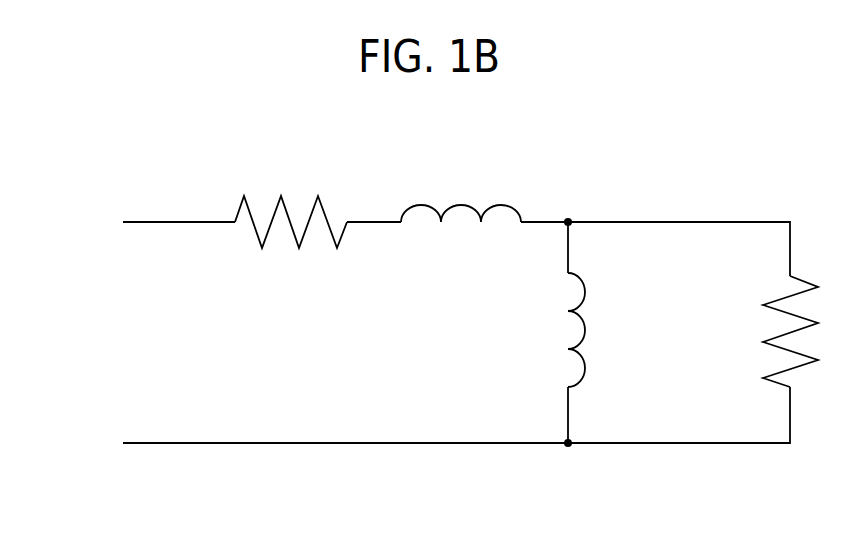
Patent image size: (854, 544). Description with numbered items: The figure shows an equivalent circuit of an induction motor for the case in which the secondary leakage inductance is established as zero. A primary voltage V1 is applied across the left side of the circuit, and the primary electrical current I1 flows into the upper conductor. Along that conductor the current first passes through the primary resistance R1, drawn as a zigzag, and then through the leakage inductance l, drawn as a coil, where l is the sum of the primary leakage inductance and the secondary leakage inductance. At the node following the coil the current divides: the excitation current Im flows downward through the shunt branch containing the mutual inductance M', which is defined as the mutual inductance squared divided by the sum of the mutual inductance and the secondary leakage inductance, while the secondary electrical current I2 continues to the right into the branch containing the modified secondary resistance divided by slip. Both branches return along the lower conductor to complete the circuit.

The primary resistance R1 is at (291, 203).
The leakage inductance l is at (461, 190).
The mutual inductance M' is at (560, 330).
The primary voltage V1 is at (95, 226).
The primary electrical current I1 is at (238, 143).
The secondary electrical current I2 is at (623, 143).
The excitation current Im is at (507, 365).